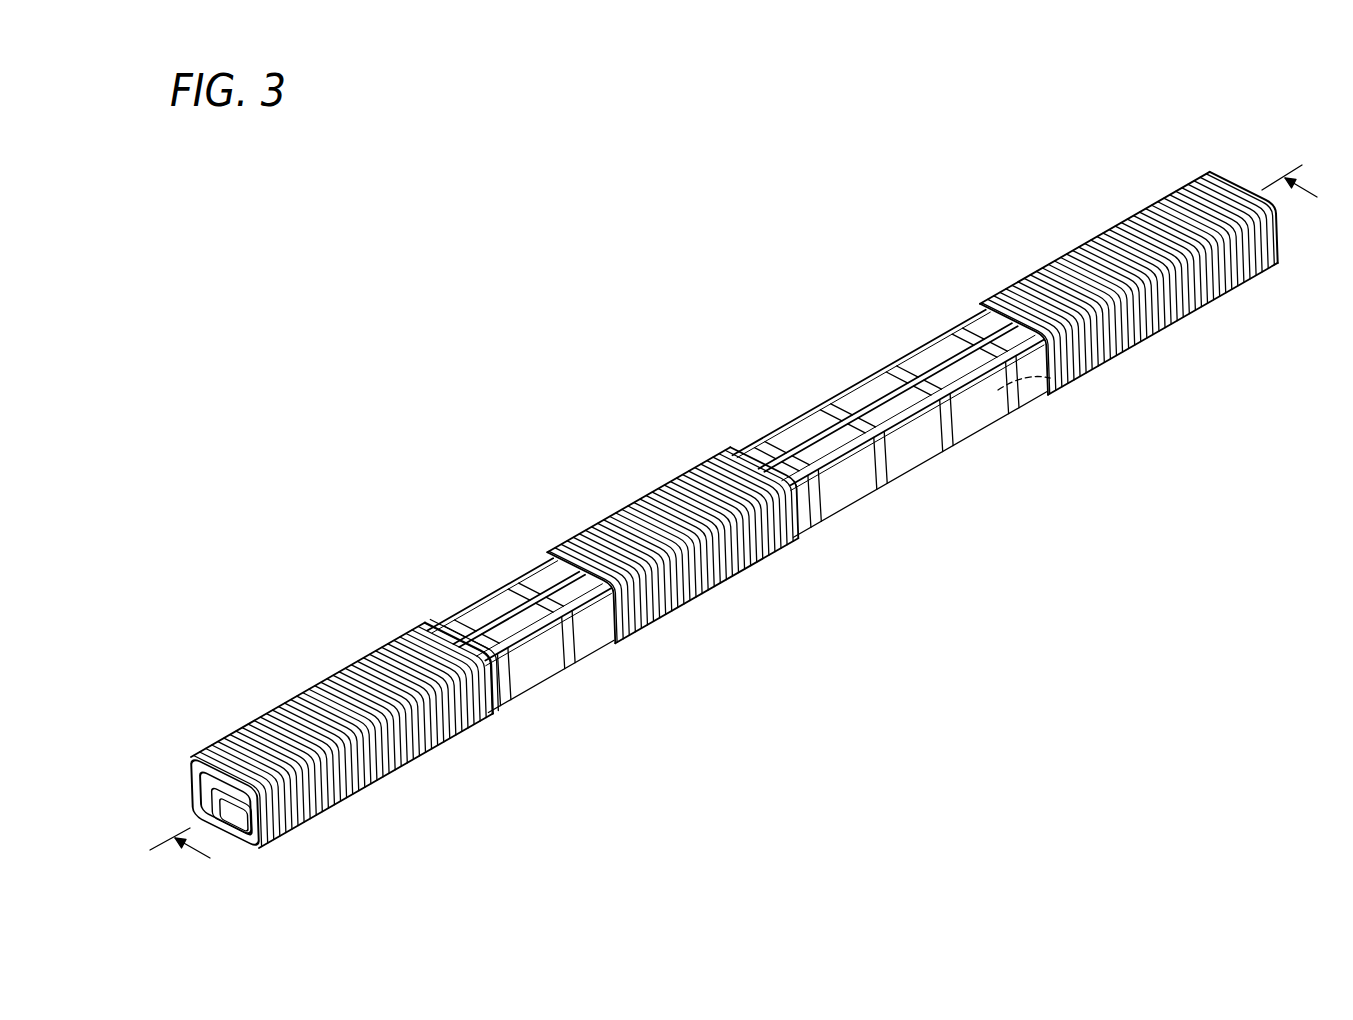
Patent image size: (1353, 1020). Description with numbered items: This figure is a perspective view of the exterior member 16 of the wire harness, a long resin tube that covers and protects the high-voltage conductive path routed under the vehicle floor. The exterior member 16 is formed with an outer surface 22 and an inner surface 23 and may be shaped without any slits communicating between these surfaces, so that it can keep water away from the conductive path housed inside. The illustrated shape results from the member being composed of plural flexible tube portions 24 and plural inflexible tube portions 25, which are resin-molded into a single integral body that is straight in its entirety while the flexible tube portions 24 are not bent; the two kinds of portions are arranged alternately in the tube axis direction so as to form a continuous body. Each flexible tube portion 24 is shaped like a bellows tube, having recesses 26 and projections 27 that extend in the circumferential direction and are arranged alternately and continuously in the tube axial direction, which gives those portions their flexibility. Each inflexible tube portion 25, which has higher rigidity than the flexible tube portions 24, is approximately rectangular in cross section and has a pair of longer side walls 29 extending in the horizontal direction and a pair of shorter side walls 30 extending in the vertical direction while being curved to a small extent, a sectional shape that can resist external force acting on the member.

The exterior member 16 is at (484, 405).
The outer surface 22 is at (1062, 380).
The inner surface 23 is at (1000, 403).
The flexible tube portion 24 is at (1075, 250).
The inflexible tube portion 25 is at (873, 382).
The recess 26 is at (422, 765).
The projection 27 is at (413, 765).
The longer side wall 29 is at (806, 440).
The shorter side wall 30 is at (846, 490).